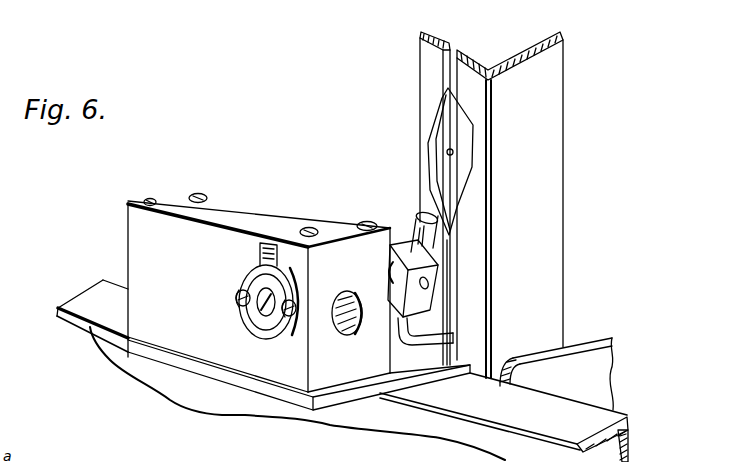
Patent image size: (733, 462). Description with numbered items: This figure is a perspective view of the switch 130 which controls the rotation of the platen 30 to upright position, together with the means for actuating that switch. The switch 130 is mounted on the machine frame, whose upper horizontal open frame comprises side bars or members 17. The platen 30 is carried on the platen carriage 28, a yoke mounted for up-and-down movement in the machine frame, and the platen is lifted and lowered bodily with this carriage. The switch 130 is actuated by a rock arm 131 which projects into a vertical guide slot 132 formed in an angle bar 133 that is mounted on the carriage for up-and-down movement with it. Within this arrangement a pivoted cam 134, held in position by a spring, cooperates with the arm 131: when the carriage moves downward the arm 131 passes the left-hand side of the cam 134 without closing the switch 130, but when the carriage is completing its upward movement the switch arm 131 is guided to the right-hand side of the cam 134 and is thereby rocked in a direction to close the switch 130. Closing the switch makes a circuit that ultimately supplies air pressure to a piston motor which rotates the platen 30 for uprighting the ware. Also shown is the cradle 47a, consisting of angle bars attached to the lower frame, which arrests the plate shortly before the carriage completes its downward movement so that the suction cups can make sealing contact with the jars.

The side bars 17 is at (588, 420).
The platen carriage 28 is at (603, 366).
The platen 30 is at (205, 461).
The cradle 47a is at (355, 448).
The switch 130 is at (143, 248).
The rock arm 131 is at (408, 323).
The vertical guide slot 132 is at (445, 307).
The angle bar 133 is at (432, 70).
The pivoted cam 134 is at (462, 138).